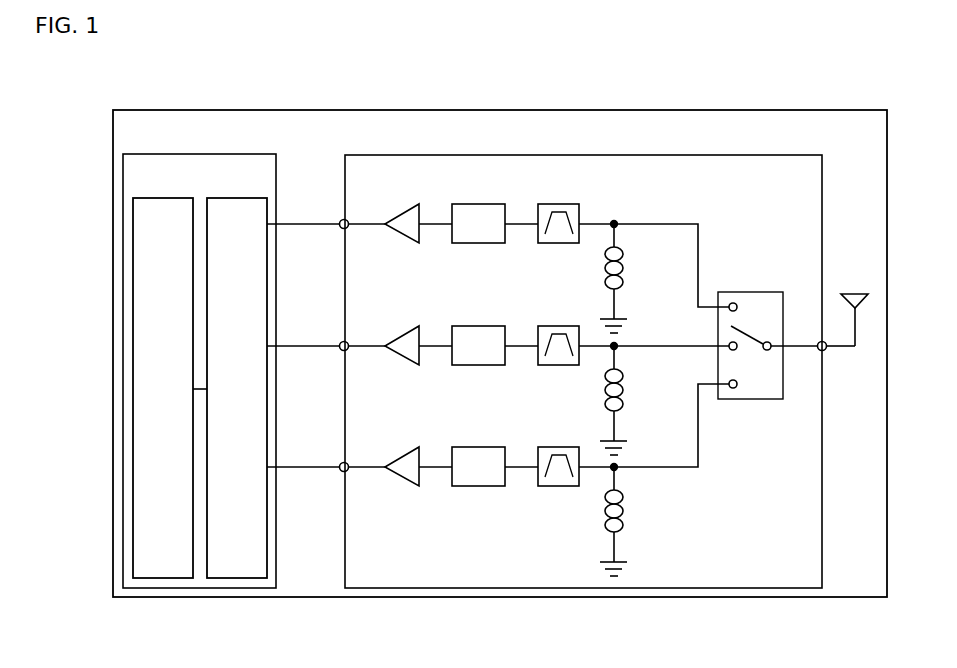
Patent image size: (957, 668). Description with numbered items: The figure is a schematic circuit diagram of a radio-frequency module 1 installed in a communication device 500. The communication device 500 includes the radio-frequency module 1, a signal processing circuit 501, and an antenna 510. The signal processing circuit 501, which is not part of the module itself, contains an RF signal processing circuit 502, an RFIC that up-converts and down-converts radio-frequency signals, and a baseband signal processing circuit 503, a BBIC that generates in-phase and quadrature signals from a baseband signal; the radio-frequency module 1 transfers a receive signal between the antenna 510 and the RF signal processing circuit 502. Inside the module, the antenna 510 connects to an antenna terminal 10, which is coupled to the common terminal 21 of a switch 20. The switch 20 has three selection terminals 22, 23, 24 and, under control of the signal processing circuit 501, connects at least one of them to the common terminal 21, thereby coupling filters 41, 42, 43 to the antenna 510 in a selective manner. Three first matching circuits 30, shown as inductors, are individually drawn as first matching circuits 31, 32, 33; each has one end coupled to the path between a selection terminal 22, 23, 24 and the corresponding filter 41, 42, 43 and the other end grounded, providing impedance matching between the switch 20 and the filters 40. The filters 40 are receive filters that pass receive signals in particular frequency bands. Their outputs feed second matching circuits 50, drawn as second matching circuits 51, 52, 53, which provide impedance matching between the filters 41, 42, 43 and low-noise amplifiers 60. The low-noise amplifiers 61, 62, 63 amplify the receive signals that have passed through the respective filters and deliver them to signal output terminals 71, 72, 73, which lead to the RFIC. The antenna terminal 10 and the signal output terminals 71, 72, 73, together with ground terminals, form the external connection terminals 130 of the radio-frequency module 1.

The radio-frequency module 1 is at (344, 157).
The antenna terminal 10 is at (826, 350).
The switch 20 is at (767, 292).
The common terminal 21 is at (770, 342).
The selection terminal 22 is at (732, 302).
The selection terminal 23 is at (729, 344).
The selection terminal 24 is at (732, 389).
The first matching circuits 30 is at (642, 399).
The first matching circuit 31 is at (631, 270).
The first matching circuit 32 is at (631, 392).
The first matching circuit 33 is at (631, 515).
The filters 40 is at (559, 376).
The filter 41 is at (556, 240).
The filter 42 is at (556, 362).
The filter 43 is at (556, 483).
The second matching circuits 50 is at (477, 376).
The second matching circuit 51 is at (478, 240).
The second matching circuit 52 is at (478, 362).
The second matching circuit 53 is at (478, 483).
The low-noise amplifiers 60 is at (390, 376).
The low-noise amplifier 61 is at (408, 232).
The low-noise amplifier 62 is at (408, 354).
The low-noise amplifier 63 is at (408, 475).
The signal output terminal 71 is at (340, 227).
The signal output terminal 72 is at (340, 348).
The signal output terminal 73 is at (341, 469).
The external connection terminals 130 is at (583, 375).
The communication device 500 is at (113, 127).
The signal processing circuit 501 is at (123, 180).
The RF signal processing circuit 502 is at (235, 573).
The baseband signal processing circuit 503 is at (169, 573).
The antenna 510 is at (852, 292).